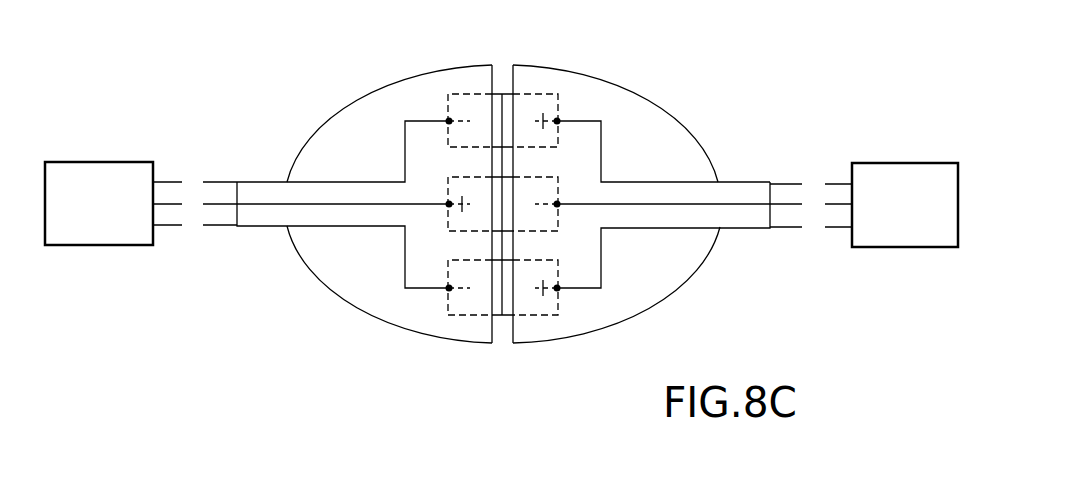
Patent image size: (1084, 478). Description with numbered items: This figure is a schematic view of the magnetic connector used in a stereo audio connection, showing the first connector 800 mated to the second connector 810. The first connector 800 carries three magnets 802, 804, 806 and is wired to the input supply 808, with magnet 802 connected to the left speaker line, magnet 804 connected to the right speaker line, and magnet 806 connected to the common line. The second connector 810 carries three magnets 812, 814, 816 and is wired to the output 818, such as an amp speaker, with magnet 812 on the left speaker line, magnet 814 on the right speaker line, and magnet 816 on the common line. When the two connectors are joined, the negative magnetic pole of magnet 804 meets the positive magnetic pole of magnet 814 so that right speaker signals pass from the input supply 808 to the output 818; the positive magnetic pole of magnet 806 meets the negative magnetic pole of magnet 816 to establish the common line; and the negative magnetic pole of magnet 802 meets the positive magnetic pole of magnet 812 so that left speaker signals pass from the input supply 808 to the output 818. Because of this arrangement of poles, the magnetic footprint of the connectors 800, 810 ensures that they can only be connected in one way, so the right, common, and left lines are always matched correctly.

The first connector 800 is at (661, 300).
The magnet 802 is at (546, 315).
The magnet 804 is at (546, 94).
The magnet 806 is at (558, 182).
The input supply 808 is at (893, 163).
The second connector 810 is at (346, 302).
The magnet 812 is at (462, 315).
The magnet 814 is at (462, 94).
The magnet 816 is at (448, 182).
The output 818 is at (112, 162).